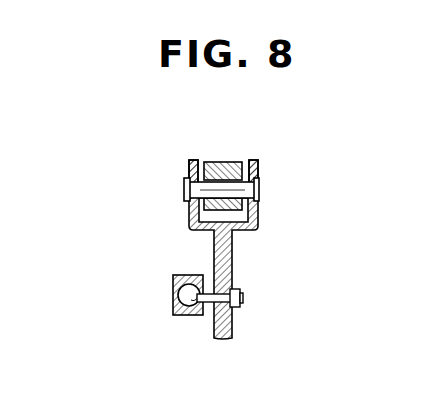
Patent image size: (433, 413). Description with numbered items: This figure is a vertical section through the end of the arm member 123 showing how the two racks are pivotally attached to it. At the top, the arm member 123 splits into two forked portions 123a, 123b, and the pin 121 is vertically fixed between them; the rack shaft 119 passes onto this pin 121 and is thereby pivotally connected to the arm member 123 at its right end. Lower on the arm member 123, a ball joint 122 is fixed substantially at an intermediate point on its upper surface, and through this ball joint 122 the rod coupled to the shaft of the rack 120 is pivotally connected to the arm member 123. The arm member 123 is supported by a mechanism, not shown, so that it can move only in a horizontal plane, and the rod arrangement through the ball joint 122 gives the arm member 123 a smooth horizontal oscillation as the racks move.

The rack shaft 119 is at (222, 162).
The rack 120 is at (173, 282).
The pin 121 is at (262, 195).
The ball joint 122 is at (192, 315).
The arm member 123 is at (232, 262).
The forked portion 123a is at (192, 160).
The forked portion 123b is at (255, 162).